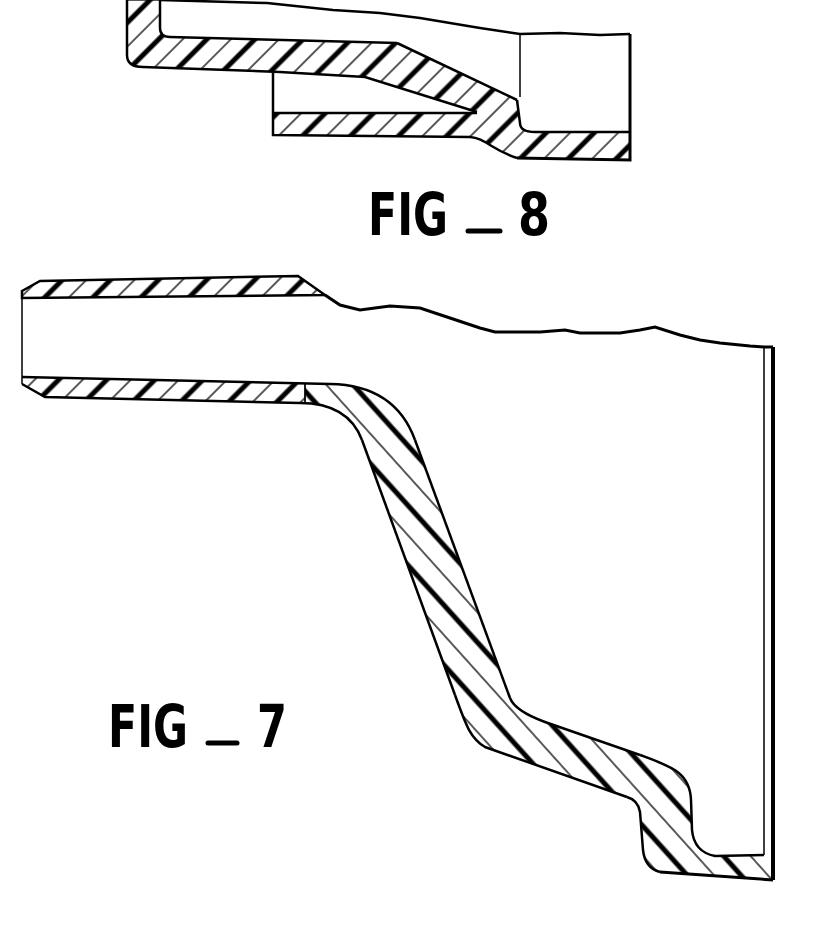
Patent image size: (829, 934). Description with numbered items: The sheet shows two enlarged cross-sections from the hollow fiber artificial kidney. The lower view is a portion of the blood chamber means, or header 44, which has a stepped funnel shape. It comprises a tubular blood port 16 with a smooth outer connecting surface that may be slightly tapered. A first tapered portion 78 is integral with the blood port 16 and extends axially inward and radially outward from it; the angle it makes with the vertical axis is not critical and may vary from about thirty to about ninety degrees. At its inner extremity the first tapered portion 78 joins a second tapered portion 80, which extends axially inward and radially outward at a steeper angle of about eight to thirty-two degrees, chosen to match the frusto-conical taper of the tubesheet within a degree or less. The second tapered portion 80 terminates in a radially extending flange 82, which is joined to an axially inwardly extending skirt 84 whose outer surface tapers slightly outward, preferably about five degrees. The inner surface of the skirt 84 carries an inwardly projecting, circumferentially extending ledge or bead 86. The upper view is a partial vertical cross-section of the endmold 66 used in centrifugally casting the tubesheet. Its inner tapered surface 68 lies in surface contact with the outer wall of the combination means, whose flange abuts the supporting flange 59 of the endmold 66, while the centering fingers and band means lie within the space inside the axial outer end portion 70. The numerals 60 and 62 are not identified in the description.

In FIG. 7, the blood port 16 is at (56, 293).
In FIG. 7, the header 44 is at (208, 444).
In FIG. 7, the first tapered portion 78 is at (392, 522).
In FIG. 7, the second tapered portion 80 is at (550, 772).
In FIG. 7, the radially extending flange 82 is at (643, 845).
In FIG. 7, the skirt 84 is at (712, 875).
In FIG. 7, the ledge 86 is at (763, 857).
In FIG. 8, the supporting flange 59 is at (520, 110).
In FIG. 8, the upper wall 60 is at (395, 21).
In FIG. 8, the end wall 62 is at (593, 80).
In FIG. 8, the endmold 66 is at (237, 95).
In FIG. 8, the inner tapered surface 68 is at (440, 63).
In FIG. 8, the axial outer end portion 70 is at (178, 70).